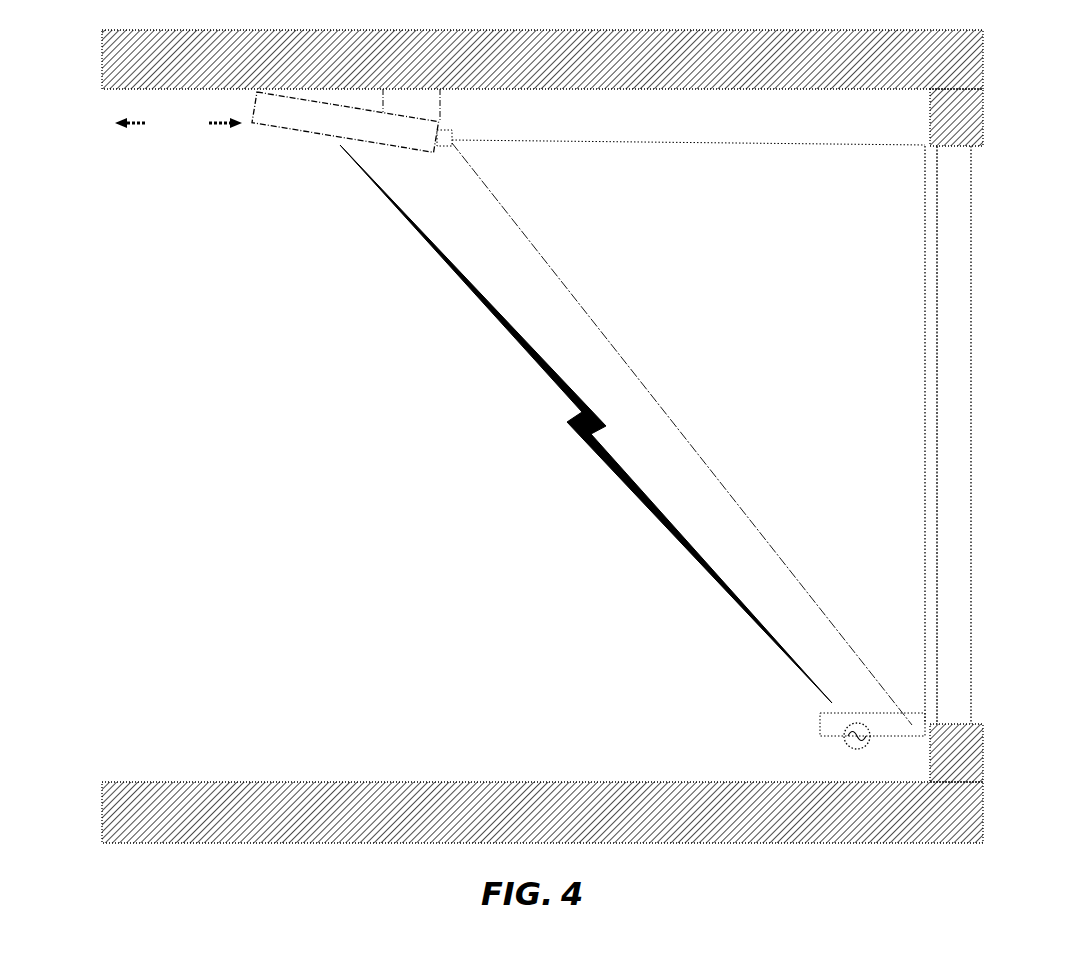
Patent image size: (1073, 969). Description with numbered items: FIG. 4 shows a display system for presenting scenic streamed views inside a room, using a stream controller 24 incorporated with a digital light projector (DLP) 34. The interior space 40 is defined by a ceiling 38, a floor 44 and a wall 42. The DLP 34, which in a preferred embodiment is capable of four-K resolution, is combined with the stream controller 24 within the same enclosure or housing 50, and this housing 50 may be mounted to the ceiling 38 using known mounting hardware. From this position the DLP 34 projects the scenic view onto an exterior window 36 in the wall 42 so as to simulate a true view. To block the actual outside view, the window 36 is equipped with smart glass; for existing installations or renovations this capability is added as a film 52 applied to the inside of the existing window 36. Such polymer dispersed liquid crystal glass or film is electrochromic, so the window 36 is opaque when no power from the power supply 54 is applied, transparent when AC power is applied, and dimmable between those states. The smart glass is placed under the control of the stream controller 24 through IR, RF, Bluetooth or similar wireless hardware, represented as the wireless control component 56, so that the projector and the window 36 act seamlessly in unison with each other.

The stream controller 24 is at (316, 134).
The digital light projector 34 is at (420, 149).
The exterior window 36 is at (975, 315).
The ceiling 38 is at (586, 95).
The interior space 40 is at (753, 375).
The wall 42 is at (987, 108).
The floor 44 is at (580, 778).
The housing 50 is at (257, 130).
The film 52 is at (921, 537).
The power supply 54 is at (814, 728).
The wireless control component 56 is at (620, 488).